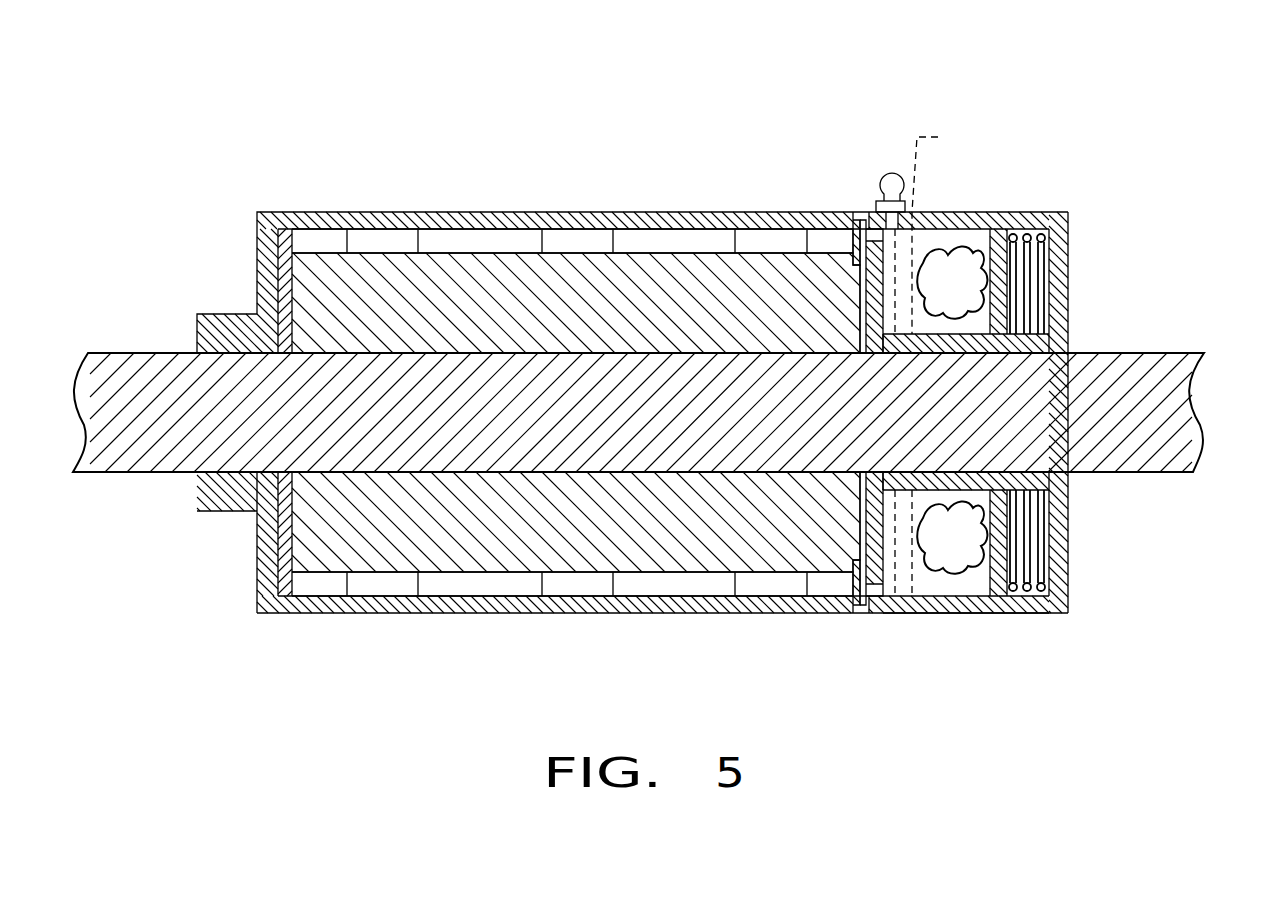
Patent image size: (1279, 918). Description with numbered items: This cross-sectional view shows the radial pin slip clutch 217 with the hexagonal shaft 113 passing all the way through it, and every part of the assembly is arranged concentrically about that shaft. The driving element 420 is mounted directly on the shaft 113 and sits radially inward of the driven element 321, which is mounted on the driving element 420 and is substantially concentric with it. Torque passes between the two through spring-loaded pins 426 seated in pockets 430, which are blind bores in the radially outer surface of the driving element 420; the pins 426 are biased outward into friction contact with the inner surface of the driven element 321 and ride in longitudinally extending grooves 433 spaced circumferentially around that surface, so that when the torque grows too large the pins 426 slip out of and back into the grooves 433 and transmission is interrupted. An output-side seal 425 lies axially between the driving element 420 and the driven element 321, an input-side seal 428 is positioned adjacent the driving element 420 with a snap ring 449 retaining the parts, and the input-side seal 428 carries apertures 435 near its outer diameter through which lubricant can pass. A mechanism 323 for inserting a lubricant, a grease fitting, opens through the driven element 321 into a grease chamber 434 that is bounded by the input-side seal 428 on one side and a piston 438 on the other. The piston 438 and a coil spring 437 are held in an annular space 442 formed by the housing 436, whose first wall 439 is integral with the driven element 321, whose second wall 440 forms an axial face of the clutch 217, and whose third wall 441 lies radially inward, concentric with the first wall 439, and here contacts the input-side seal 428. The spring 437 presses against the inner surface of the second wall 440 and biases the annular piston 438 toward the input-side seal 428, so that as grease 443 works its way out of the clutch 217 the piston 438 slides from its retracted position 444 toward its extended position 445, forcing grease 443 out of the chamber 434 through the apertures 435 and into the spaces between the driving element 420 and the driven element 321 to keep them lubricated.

The clutch 217 is at (671, 377).
The shaft 113 is at (1173, 365).
The driven element 321 is at (581, 614).
The mechanism for inserting a lubricant 323 is at (886, 178).
The driving element 420 is at (335, 535).
The output-side seal 425 is at (275, 262).
The pins 426 is at (377, 582).
The input-side seal 428 is at (870, 535).
The pockets 430 is at (605, 265).
The longitudinally extending grooves 433 is at (455, 243).
The grease chamber 434 is at (972, 582).
The apertures 435 is at (857, 600).
The housing 436 is at (1070, 249).
The spring 437 is at (1033, 568).
The piston 438 is at (1000, 598).
The first wall 439 is at (945, 605).
The second wall 440 is at (1068, 518).
The third wall 441 is at (1010, 458).
The annular space 442 is at (1035, 293).
The grease 443 is at (951, 272).
The retracted position 444 is at (988, 240).
The extended position 445 is at (936, 359).
The snap ring 449 is at (856, 240).